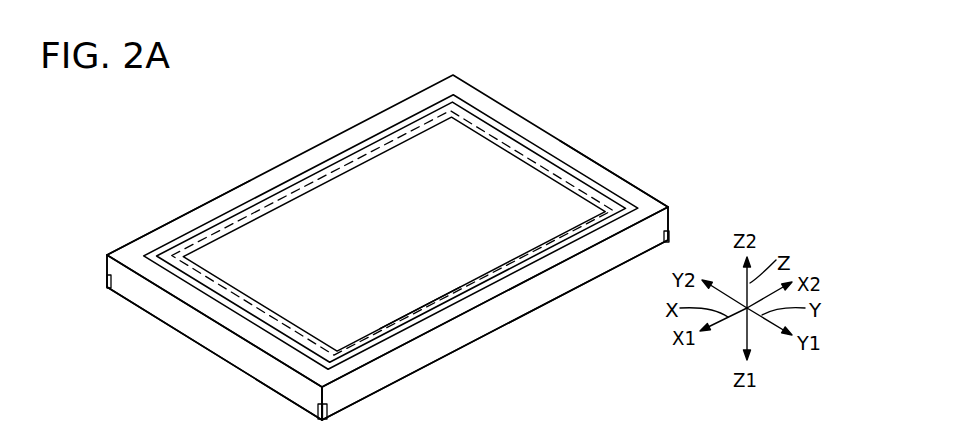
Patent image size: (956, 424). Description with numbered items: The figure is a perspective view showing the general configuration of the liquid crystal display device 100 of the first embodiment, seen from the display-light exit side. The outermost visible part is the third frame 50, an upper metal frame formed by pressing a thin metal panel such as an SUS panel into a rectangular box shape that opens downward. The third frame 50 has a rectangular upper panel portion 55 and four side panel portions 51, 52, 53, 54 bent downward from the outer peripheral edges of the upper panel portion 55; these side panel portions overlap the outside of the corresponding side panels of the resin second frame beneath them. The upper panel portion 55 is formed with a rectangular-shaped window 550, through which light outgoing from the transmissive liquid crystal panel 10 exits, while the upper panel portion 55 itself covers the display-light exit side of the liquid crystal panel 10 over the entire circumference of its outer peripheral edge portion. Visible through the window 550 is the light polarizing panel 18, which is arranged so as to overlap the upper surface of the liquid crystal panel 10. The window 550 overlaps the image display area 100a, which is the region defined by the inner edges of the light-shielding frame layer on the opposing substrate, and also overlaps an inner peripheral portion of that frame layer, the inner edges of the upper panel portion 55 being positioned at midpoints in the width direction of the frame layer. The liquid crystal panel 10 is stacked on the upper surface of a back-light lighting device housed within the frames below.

The liquid crystal display device 100 is at (160, 103).
The image display area 100a is at (422, 310).
The third frame 50 is at (499, 86).
The side panel portion 51 is at (532, 298).
The side panel portion 52 is at (175, 218).
The side panel portion 53 is at (200, 335).
The side panel portion 54 is at (627, 176).
The upper panel portion 55 is at (584, 164).
The window 550 is at (541, 141).
The liquid crystal panel 10 is at (308, 202).
The light polarizing panel 18 is at (403, 157).